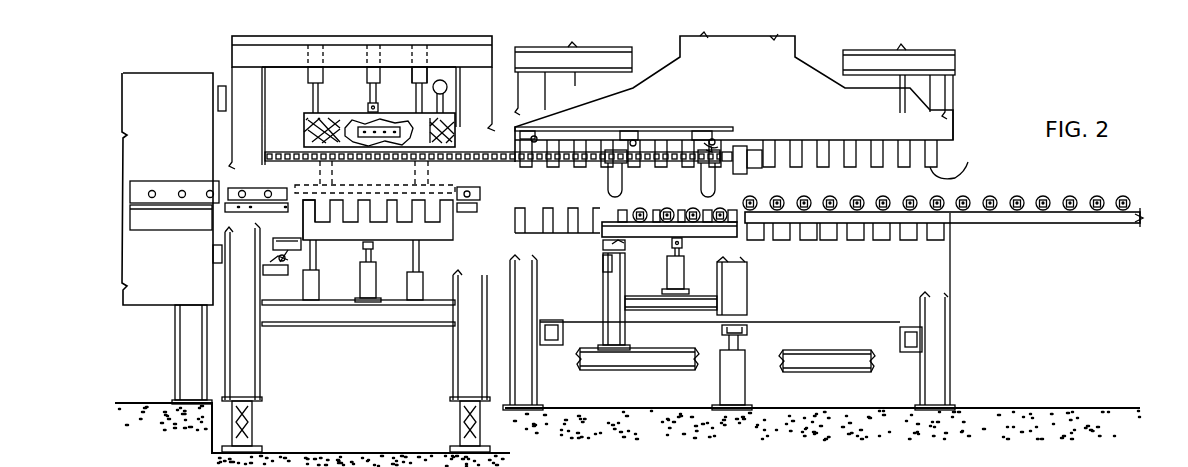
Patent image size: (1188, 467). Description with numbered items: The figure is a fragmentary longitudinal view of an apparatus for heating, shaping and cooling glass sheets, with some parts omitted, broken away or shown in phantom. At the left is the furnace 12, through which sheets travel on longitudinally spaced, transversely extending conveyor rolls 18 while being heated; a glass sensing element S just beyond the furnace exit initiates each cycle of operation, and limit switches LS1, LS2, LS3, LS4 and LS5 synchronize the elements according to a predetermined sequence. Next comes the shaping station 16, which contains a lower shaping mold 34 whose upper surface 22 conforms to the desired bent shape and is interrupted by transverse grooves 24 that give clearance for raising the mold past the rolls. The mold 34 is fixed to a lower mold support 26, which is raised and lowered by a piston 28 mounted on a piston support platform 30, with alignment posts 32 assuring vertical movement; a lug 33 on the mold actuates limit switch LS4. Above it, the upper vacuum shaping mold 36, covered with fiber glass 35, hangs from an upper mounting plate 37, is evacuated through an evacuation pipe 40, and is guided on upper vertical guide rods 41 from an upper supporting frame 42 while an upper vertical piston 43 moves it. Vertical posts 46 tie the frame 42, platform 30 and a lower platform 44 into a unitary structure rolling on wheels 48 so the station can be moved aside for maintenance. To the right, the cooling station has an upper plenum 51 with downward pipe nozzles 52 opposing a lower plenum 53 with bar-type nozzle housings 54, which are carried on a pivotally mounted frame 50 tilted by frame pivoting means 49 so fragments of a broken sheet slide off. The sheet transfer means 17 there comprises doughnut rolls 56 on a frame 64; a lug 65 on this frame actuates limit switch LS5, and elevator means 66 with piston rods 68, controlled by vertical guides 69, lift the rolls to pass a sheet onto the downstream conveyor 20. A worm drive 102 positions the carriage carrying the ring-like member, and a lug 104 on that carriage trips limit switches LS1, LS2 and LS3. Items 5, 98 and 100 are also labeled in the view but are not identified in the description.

The furnace 12 is at (192, 64).
The glass sensing element S is at (220, 84).
The switch 5 is at (213, 260).
The shaping station 16 is at (361, 27).
The conveyor rolls 18 is at (243, 192).
The downstream conveyor 20 is at (1018, 227).
The upper surface 22 is at (388, 196).
The grooves 24 is at (318, 212).
The lower mold support 26 is at (323, 225).
The piston 28 is at (376, 283).
The piston support platform 30 is at (332, 307).
The alignment posts 32 is at (424, 260).
The lug 33 is at (300, 240).
The lower shaping mold 34 is at (457, 225).
The fiber glass 35 is at (456, 142).
The upper vacuum shaping mold 36 is at (302, 140).
The upper mounting plate 37 is at (328, 118).
The evacuation pipe 40 is at (445, 80).
The upper vertical guide rods 41 is at (310, 97).
The upper supporting frame 42 is at (426, 43).
The upper vertical piston 43 is at (390, 77).
The lower platform 44 is at (277, 330).
The vertical posts 46 is at (455, 348).
The wheels 48 is at (252, 441).
The frame pivoting means 49 is at (740, 330).
The pivotally mounted frame 50 is at (553, 347).
The upper plenum 51 is at (878, 128).
The pipe nozzles 52 is at (966, 162).
The lower plenum 53 is at (847, 296).
The lower bar-type nozzle housings 54 is at (908, 240).
The doughnut rolls 56 is at (694, 207).
The frame 64 is at (735, 238).
The lug 65 is at (634, 249).
The elevator means 66 is at (684, 279).
The piston rod 68 is at (683, 245).
The vertical guides 69 is at (603, 283).
The pusher 98 is at (606, 180).
The stop 100 is at (730, 165).
The worm drive 102 is at (488, 163).
The lug 104 is at (716, 148).
The limit switch LS1 is at (534, 124).
The limit switch LS2 is at (628, 128).
The limit switch LS3 is at (700, 128).
The limit switch LS4 is at (288, 271).
The limit switch LS5 is at (605, 246).
The sheet transfer means 17 is at (684, 323).